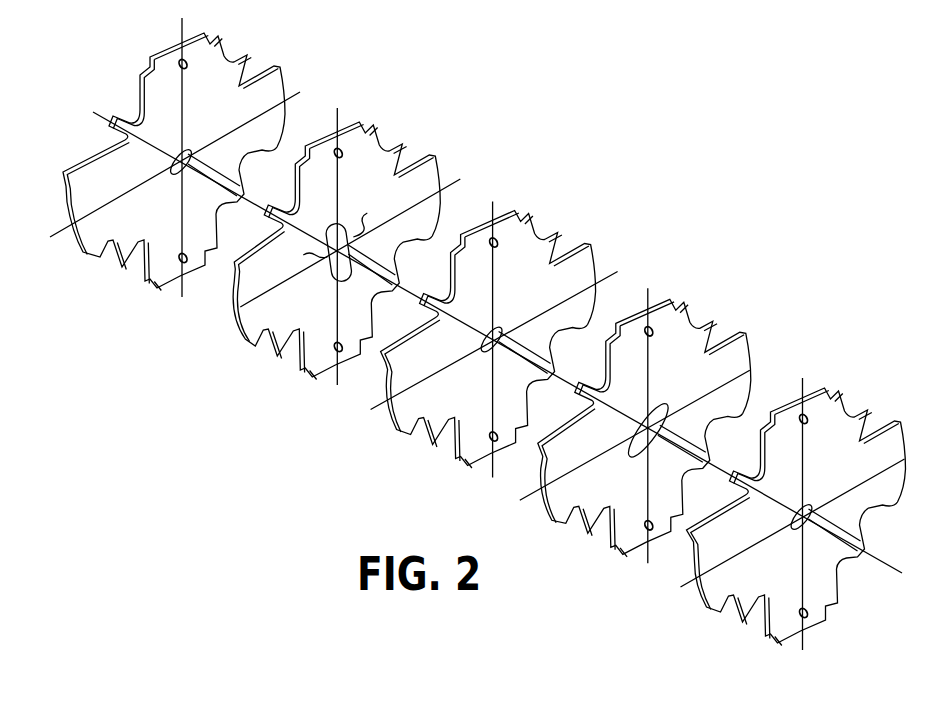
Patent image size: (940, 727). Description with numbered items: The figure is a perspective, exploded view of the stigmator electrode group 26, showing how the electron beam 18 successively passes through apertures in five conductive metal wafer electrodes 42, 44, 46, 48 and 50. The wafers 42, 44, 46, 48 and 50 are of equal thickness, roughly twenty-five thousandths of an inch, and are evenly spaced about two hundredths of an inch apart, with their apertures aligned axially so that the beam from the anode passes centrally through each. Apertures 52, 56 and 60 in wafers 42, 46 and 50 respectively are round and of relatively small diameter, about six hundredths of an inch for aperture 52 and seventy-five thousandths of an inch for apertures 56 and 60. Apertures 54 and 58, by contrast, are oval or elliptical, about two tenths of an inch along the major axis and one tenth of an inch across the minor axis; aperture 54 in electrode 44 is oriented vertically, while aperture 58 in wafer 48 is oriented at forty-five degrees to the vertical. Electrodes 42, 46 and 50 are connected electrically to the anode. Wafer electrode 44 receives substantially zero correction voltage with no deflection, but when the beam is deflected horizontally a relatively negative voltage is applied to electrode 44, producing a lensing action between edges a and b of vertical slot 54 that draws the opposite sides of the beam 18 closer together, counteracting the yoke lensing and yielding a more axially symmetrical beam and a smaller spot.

The electron beam 18 is at (890, 570).
The electrode group 26 is at (518, 156).
The wafer electrode 42 is at (175, 157).
The wafer electrode 44 is at (336, 249).
The wafer electrode 46 is at (494, 340).
The wafer electrode 48 is at (636, 433).
The wafer electrode 50 is at (793, 515).
The aperture 52 is at (222, 171).
The aperture 54 is at (384, 253).
The aperture 56 is at (535, 349).
The aperture 58 is at (688, 430).
The aperture 60 is at (845, 526).